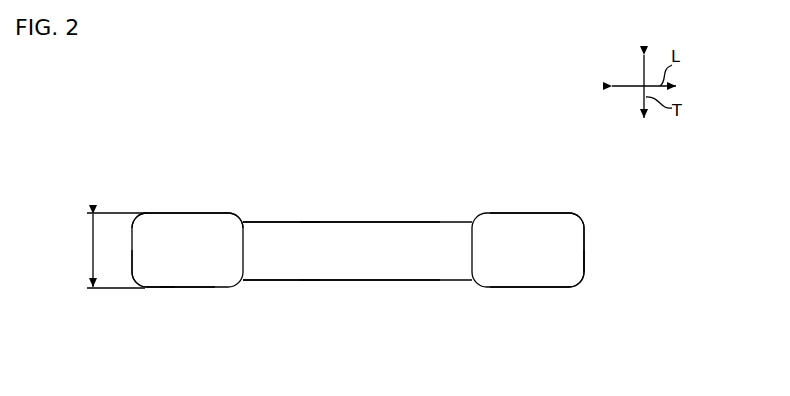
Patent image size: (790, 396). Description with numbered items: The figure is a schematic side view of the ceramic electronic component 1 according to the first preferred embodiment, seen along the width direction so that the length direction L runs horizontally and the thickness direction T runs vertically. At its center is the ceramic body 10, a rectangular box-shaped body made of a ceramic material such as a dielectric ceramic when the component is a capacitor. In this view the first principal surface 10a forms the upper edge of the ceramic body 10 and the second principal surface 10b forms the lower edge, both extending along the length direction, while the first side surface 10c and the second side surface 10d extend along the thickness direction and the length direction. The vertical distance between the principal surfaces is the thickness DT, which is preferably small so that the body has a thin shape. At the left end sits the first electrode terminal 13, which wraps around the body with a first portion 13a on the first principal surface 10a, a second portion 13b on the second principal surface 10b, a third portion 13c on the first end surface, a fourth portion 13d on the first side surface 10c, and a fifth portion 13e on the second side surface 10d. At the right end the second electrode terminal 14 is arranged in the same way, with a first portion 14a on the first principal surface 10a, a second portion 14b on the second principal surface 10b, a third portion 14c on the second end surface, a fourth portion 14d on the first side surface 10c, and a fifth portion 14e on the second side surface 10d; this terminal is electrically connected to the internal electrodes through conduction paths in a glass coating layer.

The ceramic electronic component 1 is at (467, 172).
The ceramic body 10 is at (412, 283).
The first principal surface 10a is at (372, 221).
The second principal surface 10b is at (360, 281).
The first side surface 10c is at (308, 272).
The second side surface 10d is at (307, 221).
The first electrode terminal 13 is at (218, 292).
The first portion 13a is at (202, 212).
The second portion 13b is at (183, 288).
The third portion 13c is at (130, 232).
The fourth portion 13d is at (162, 260).
The fifth portion 13e is at (227, 212).
The second electrode terminal 14 is at (508, 292).
The first portion 14a is at (515, 212).
The second portion 14b is at (527, 288).
The third portion 14c is at (584, 236).
The fourth portion 14d is at (555, 265).
The fifth portion 14e is at (560, 212).
The thickness DT is at (116, 250).